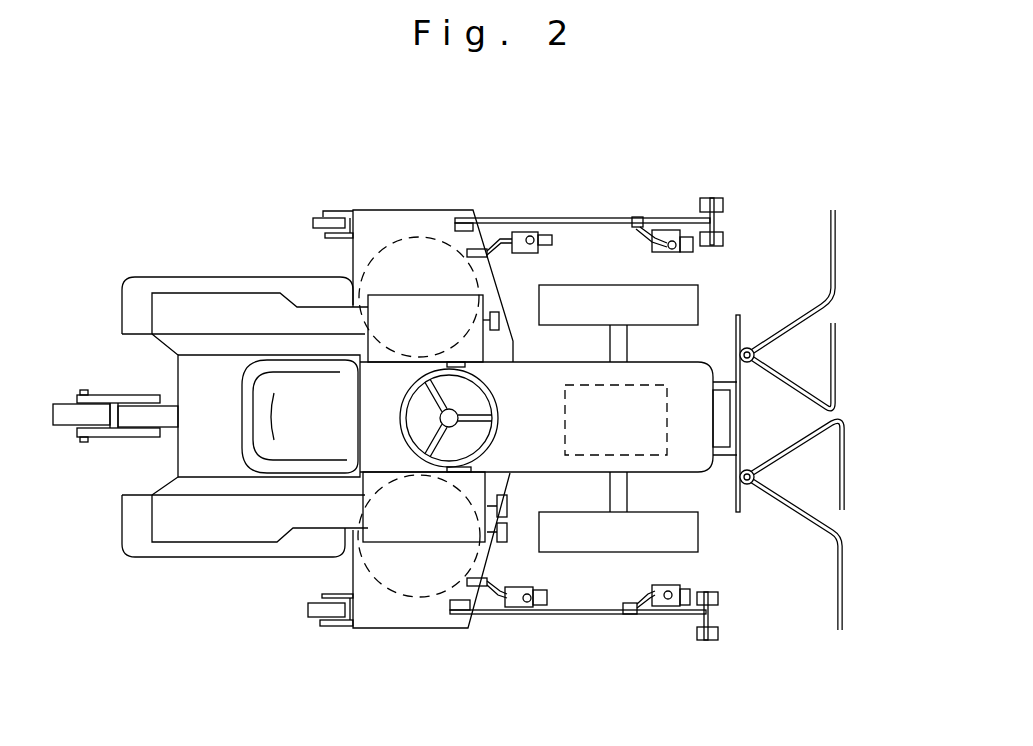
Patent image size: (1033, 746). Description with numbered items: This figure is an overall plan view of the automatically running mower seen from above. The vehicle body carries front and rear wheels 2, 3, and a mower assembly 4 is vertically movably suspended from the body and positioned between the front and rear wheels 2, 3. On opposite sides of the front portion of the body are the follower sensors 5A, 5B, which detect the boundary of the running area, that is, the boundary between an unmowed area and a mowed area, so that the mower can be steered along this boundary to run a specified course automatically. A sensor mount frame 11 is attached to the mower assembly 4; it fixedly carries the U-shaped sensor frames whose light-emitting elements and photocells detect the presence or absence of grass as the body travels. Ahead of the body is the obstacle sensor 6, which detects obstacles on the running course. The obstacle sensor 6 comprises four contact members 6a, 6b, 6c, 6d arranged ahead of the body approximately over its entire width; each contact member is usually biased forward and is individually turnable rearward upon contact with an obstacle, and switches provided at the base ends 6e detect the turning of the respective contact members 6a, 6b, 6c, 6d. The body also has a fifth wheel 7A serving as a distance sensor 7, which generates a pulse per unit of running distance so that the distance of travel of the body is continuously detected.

The front wheels 2 is at (595, 552).
The rear wheels 3 is at (237, 285).
The mower assembly 4 is at (435, 222).
The follower sensor 5A is at (735, 196).
The follower sensor 5B is at (740, 630).
The obstacle sensor 6 is at (843, 403).
The contact member 6a is at (837, 262).
The contact member 6b is at (837, 365).
The contact member 6c is at (847, 475).
The contact member 6d is at (843, 588).
The base end 6e is at (754, 369).
The distance sensor 7 is at (115, 404).
The fifth wheel 7A is at (63, 392).
The sensor mount frame 11 is at (583, 220).